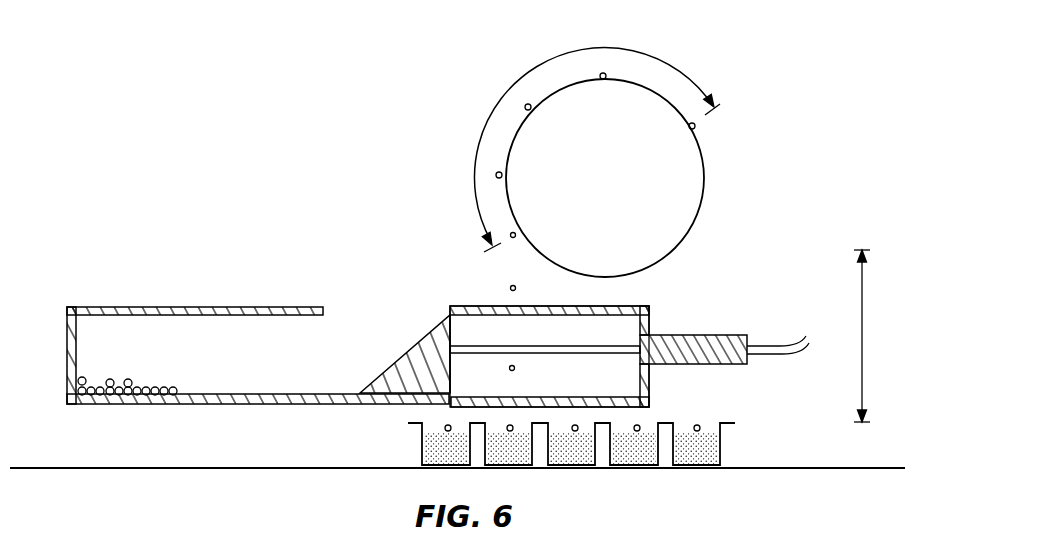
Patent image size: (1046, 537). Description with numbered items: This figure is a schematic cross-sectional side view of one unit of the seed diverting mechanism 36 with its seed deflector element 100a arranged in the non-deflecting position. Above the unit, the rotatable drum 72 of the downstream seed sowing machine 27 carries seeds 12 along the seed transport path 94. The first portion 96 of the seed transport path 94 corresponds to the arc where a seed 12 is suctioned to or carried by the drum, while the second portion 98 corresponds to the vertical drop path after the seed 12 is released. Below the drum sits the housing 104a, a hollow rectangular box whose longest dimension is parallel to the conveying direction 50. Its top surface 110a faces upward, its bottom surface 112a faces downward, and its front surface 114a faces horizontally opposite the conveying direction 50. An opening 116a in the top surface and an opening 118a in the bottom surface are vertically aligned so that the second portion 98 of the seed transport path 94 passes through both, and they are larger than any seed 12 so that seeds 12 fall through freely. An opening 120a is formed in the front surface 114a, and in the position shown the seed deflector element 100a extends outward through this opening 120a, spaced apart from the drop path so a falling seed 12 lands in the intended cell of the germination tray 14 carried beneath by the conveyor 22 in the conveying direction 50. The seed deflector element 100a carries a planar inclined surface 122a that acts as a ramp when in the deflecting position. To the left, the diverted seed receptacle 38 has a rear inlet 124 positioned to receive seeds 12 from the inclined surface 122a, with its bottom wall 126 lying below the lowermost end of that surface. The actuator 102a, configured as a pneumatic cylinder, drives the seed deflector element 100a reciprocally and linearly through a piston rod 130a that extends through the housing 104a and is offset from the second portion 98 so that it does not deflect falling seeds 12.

The seeds 12 is at (605, 72).
The germination tray 14 is at (400, 442).
The conveyor 22 is at (72, 450).
The downstream seed sowing machine 27 is at (773, 130).
The seed diverting mechanism 36 is at (743, 260).
The diverted seed receptacle 38 is at (62, 285).
The conveying direction 50 is at (748, 437).
The rotatable drum 72 is at (708, 216).
The seed transport path 94 is at (465, 78).
The first portion of the seed transport path 96 is at (547, 60).
The second portion of the seed transport path 98 is at (865, 355).
The seed deflector element 100a is at (418, 318).
The actuator 102a is at (743, 322).
The housing 104a is at (618, 298).
The top surface 110a is at (648, 304).
The bottom surface 112a is at (642, 407).
The front surface 114a is at (450, 314).
The opening in the top surface 116a is at (517, 306).
The opening in the bottom surface 118a is at (517, 398).
The opening in the front surface 120a is at (473, 325).
The inclined surface 122a is at (393, 363).
The inlet 124 is at (373, 328).
The bottom wall 126 is at (228, 406).
The piston rod 130a is at (570, 354).